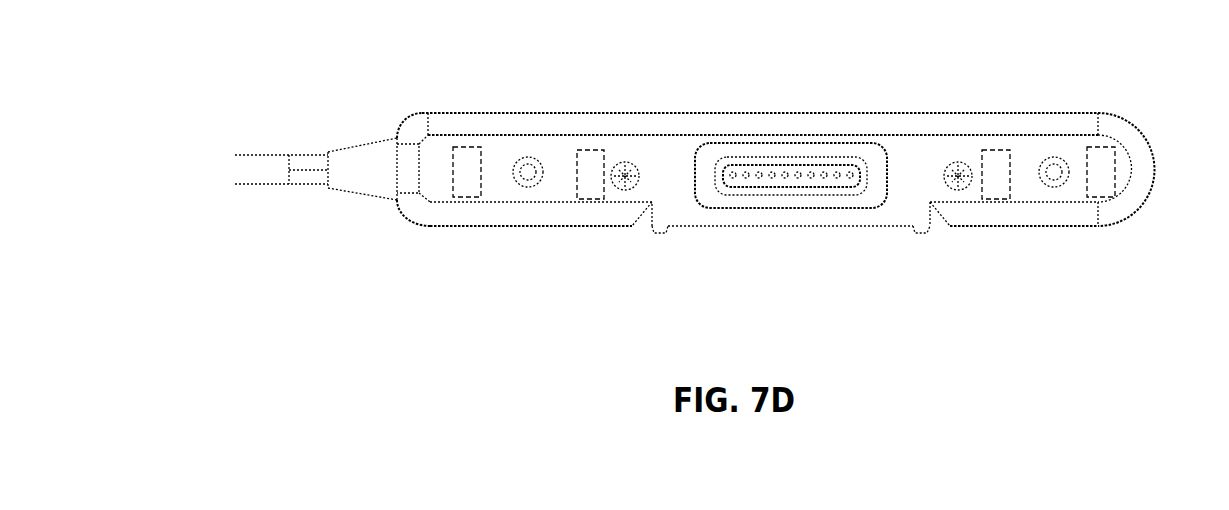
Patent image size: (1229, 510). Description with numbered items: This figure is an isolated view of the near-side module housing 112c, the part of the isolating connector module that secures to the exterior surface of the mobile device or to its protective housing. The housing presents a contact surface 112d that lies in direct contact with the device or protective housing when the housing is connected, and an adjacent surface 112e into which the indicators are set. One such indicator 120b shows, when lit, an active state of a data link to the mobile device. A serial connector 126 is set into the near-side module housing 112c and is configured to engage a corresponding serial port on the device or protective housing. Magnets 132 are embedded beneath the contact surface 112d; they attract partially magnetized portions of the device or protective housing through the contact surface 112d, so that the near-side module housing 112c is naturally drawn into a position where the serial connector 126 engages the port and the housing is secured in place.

The near-side module housing 112c is at (265, 57).
The contact surface 112d is at (659, 150).
The surface 112e is at (819, 225).
The indicator 120b is at (927, 228).
The serial connector 126 is at (818, 172).
The magnets 132 is at (467, 162).